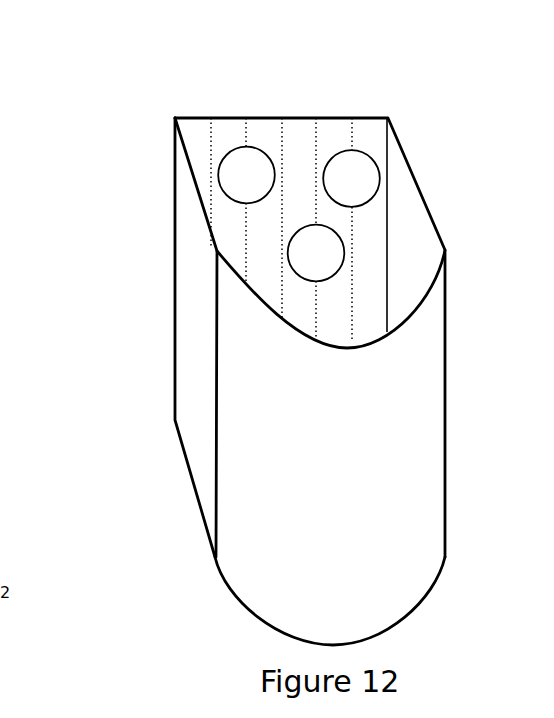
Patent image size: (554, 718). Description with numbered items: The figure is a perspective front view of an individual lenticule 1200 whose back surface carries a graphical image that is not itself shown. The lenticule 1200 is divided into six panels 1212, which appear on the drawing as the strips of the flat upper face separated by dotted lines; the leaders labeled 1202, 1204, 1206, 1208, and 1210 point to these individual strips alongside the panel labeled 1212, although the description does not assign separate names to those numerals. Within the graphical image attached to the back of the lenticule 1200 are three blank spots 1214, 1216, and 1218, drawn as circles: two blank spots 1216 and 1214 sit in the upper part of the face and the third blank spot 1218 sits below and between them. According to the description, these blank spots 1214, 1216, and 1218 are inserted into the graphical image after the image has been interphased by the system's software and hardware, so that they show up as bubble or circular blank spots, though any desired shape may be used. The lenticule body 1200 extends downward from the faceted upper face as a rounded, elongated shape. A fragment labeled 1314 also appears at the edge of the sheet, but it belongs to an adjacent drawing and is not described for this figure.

The lenticule 1200 is at (62, 118).
The flat face segment 1202 is at (370, 128).
The flat face segment 1204 is at (328, 127).
The flat face segment 1206 is at (295, 132).
The flat face segment 1208 is at (267, 132).
The flat face segment 1210 is at (228, 130).
The panels 1212 is at (188, 128).
The blank spot 1214 is at (380, 178).
The blank spot 1216 is at (218, 190).
The blank spot 1218 is at (288, 254).
The adjacent figure element (partial) 1314 is at (0, 692).